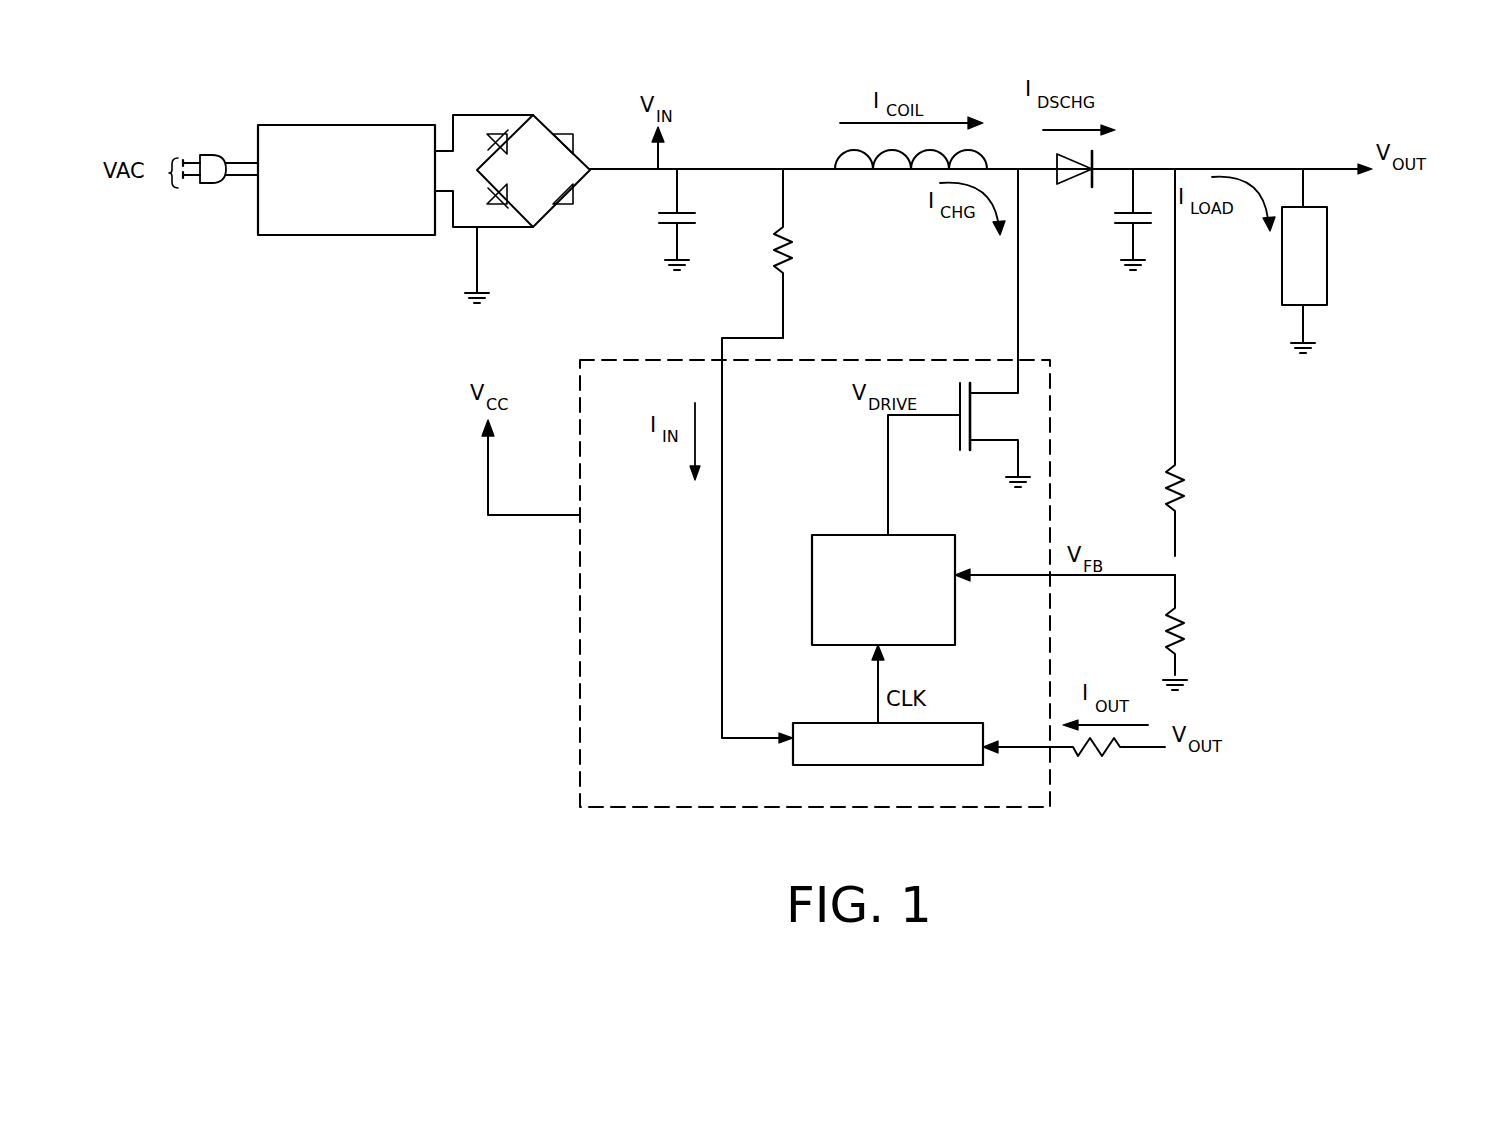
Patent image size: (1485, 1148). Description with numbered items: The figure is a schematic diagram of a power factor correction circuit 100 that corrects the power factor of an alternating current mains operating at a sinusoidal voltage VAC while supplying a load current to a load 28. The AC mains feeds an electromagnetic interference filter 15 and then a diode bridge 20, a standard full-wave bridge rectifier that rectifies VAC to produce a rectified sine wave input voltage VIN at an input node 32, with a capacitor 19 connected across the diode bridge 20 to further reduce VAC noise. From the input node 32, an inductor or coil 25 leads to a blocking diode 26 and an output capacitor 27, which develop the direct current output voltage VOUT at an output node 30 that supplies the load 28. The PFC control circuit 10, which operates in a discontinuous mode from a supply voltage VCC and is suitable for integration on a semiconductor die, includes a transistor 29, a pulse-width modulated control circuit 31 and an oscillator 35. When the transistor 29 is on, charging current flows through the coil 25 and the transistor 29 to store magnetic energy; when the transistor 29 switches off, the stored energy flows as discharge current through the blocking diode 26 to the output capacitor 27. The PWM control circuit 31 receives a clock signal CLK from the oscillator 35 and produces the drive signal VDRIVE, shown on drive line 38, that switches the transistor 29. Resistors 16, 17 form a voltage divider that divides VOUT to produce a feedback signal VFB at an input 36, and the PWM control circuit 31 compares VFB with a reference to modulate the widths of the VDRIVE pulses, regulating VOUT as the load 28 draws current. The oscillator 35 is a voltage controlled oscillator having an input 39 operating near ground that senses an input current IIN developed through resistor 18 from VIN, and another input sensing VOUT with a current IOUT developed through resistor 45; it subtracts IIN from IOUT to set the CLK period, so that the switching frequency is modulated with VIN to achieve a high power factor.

The power factor correction circuit 100 is at (397, 785).
The PFC control circuit 10 is at (580, 735).
The electromagnetic interference filter 15 is at (292, 235).
The diode bridge 20 is at (546, 238).
The capacitor 19 is at (662, 222).
The input node 32 is at (737, 165).
The resistor 18 is at (793, 256).
The oscillator input 39 is at (720, 354).
The coil 25 is at (886, 174).
The blocking diode 26 is at (1059, 189).
The output capacitor 27 is at (1109, 226).
The output node 30 is at (1186, 166).
The load 28 is at (1327, 235).
The resistor 16 is at (1185, 482).
The resistor 17 is at (1191, 621).
The input 36 is at (1128, 577).
The transistor 29 is at (958, 458).
The drive signal line 38 is at (888, 462).
The pulse-width modulated control circuit 31 is at (832, 535).
The oscillator 35 is at (797, 760).
The resistor 45 is at (1111, 755).